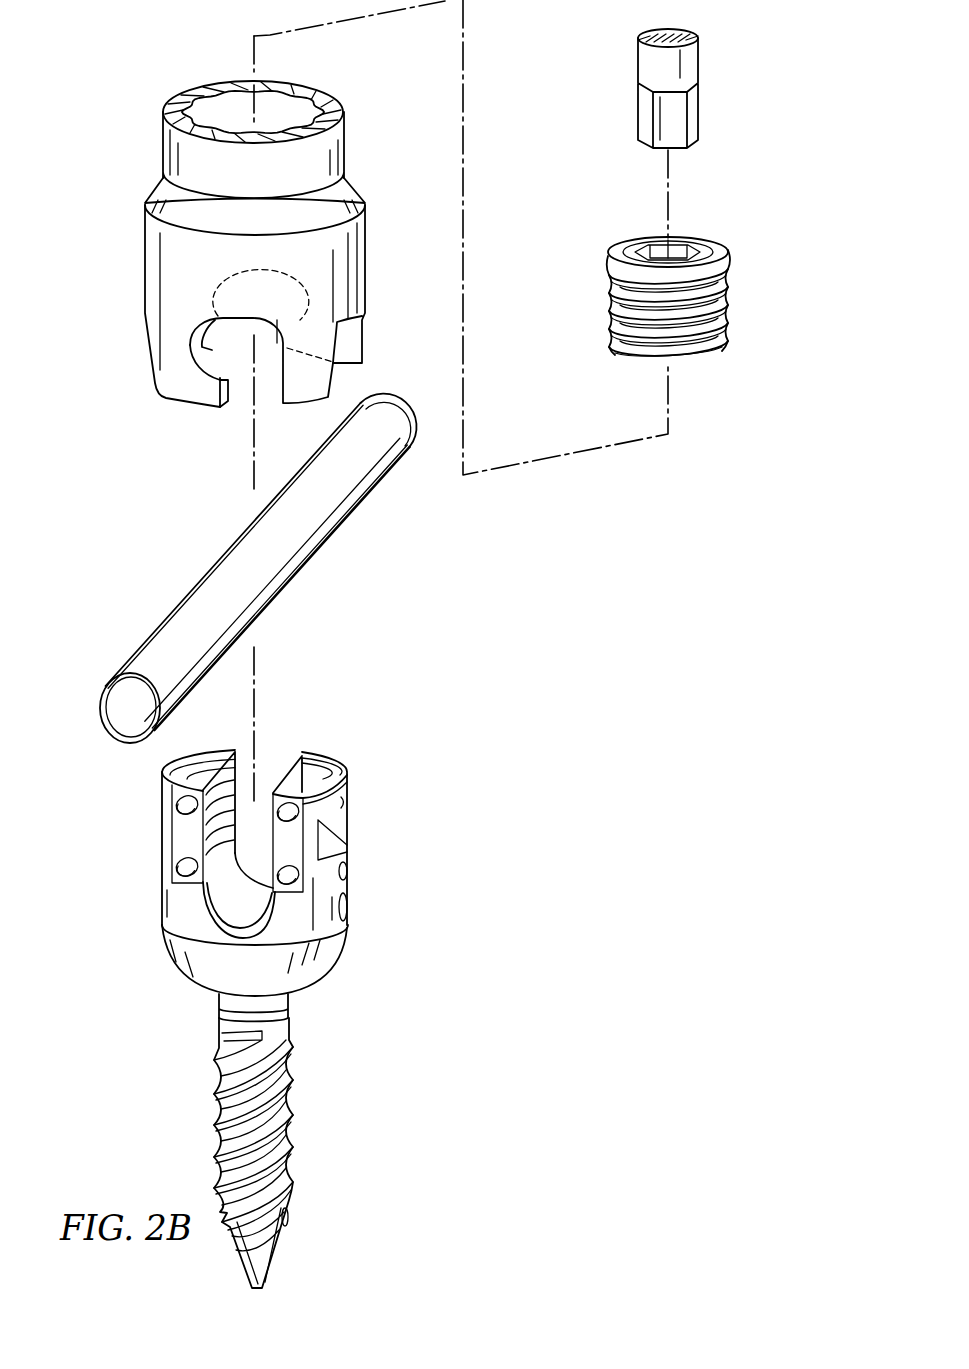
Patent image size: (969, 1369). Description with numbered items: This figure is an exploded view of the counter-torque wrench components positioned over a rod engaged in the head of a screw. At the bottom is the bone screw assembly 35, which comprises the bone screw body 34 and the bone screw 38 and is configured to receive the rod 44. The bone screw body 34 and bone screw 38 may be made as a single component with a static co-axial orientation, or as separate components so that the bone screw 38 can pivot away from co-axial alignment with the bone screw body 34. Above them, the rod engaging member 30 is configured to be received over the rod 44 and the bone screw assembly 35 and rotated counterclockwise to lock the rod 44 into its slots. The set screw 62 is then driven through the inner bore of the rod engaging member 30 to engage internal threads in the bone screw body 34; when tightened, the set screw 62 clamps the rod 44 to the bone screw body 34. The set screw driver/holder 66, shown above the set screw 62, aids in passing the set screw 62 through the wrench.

The rod engaging member 30 is at (143, 255).
The rod 44 is at (218, 593).
The bone screw assembly 35 is at (290, 733).
The bone screw body 34 is at (162, 902).
The bone screw 38 is at (220, 1097).
The set screw 62 is at (727, 296).
The set screw driver/holder 66 is at (700, 62).